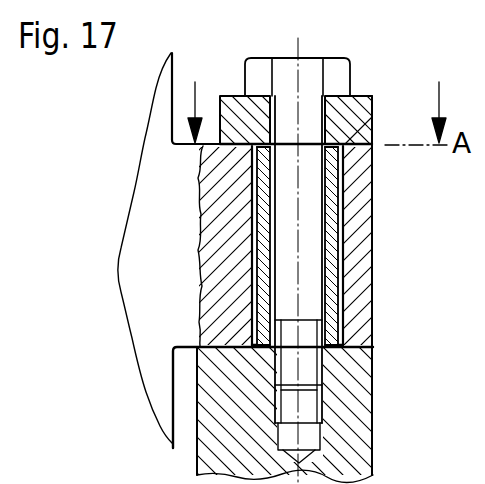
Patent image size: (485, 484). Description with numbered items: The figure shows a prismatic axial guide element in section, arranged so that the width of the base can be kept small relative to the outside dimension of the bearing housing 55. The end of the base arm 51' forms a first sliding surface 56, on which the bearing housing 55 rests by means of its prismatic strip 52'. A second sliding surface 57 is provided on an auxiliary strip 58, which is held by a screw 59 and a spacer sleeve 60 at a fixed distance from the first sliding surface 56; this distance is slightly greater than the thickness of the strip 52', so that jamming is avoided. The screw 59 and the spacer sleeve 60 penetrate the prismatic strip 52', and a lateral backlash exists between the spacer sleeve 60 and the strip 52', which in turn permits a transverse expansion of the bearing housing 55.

The base arm 51' is at (277, 414).
The prismatic strip 52' is at (244, 285).
The bearing housing 55 is at (142, 283).
The first sliding surface 56 is at (353, 340).
The second sliding surface 57 is at (202, 219).
The auxiliary strip 58 is at (374, 100).
The screw 59 is at (313, 186).
The spacer sleeve 60 is at (338, 243).